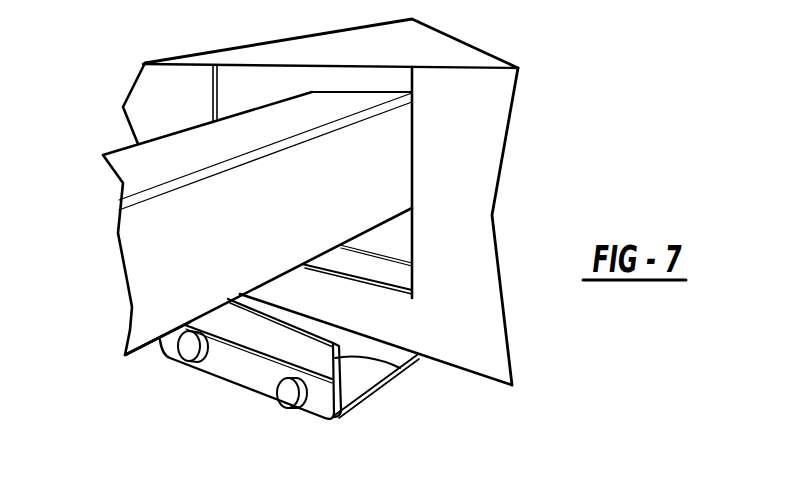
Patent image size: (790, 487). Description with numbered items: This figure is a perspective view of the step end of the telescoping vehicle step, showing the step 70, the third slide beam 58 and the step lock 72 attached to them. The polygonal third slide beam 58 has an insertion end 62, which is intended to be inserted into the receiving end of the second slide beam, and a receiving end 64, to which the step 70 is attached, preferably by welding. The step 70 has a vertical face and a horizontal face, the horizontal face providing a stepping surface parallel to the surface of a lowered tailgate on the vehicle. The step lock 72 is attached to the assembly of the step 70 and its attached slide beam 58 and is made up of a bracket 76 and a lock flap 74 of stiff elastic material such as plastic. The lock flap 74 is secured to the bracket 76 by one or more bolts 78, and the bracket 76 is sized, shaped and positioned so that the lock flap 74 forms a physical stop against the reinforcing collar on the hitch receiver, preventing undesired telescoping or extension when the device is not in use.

The third slide beam 58 is at (147, 347).
The insertion end 62 is at (143, 278).
The receiving end 64 is at (388, 166).
The step 70 is at (437, 45).
The step lock 72 is at (404, 403).
The lock flap 74 is at (415, 358).
The bracket 76 is at (368, 402).
The bolts 78 is at (195, 349).